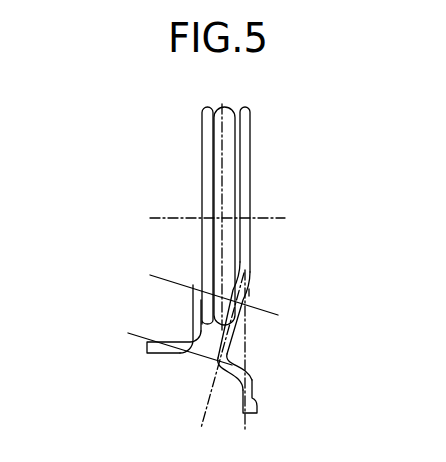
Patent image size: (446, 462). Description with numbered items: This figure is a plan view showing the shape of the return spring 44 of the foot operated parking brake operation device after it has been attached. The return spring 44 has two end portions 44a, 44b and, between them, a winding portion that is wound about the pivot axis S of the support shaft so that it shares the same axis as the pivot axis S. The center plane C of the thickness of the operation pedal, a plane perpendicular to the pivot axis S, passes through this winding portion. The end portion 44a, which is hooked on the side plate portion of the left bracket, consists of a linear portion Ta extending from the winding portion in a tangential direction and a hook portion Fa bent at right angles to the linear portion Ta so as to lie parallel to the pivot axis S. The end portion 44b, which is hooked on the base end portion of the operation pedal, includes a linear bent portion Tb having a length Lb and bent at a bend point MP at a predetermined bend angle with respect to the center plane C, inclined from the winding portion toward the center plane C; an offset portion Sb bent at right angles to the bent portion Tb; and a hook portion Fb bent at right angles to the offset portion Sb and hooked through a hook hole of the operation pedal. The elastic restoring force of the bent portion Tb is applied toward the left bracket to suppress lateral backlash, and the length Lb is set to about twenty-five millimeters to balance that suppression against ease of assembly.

The return spring 44 is at (143, 148).
The end portion 44a is at (132, 290).
The end portion 44b is at (293, 337).
The linear portion Ta is at (193, 290).
The hook portion Fa is at (170, 342).
The bent portion Tb is at (229, 353).
The offset portion Sb is at (241, 374).
The hook portion Fb is at (279, 396).
The center plane C is at (222, 104).
The pivot axis S is at (258, 218).
The bend point MP is at (251, 293).
The length Lb is at (155, 281).